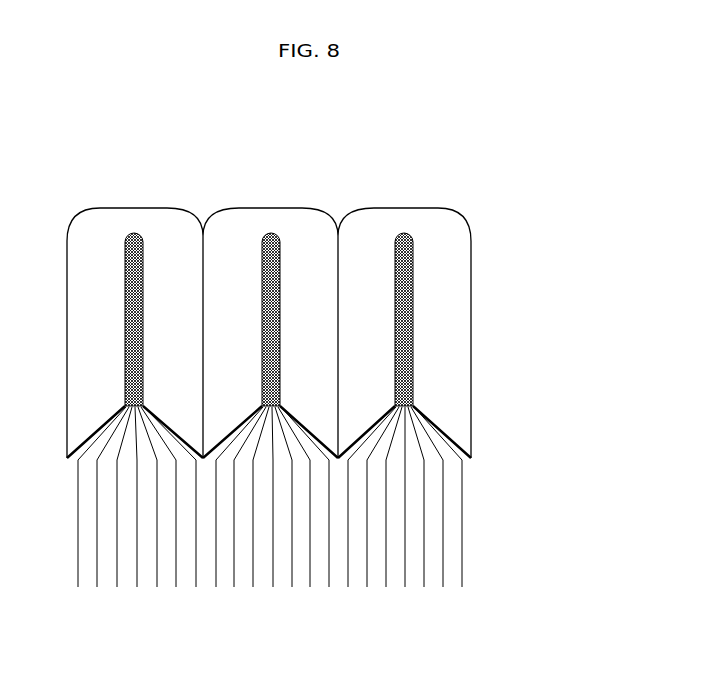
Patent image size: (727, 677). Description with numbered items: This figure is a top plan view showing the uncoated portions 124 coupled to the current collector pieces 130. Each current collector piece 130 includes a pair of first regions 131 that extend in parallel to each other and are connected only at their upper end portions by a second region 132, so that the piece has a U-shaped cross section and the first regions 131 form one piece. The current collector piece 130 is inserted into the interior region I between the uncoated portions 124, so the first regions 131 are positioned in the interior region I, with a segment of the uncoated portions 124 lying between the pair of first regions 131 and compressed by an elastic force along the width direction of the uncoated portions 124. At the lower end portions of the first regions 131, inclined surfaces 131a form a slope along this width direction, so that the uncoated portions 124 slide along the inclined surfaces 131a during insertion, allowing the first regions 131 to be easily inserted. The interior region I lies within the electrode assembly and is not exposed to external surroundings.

The current collector piece 130 is at (512, 200).
The first regions 131 is at (463, 307).
The inclined surfaces 131a is at (458, 427).
The second region 132 is at (400, 208).
The uncoated portions 124 is at (466, 545).
The interior region I is at (276, 488).